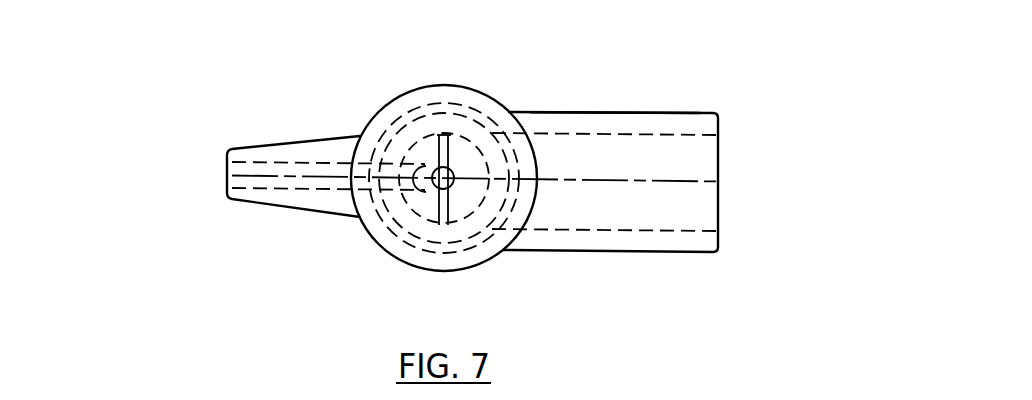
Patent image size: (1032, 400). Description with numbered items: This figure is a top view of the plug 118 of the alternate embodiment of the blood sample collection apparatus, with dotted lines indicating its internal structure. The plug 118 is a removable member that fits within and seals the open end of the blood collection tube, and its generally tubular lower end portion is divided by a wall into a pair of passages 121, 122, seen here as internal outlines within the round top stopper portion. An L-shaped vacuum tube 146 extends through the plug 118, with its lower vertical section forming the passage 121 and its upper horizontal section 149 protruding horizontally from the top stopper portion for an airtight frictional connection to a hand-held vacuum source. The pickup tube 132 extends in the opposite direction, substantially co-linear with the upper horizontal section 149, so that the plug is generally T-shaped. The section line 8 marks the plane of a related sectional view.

The section line 8- 8 is at (471, 137).
The plug 118 is at (448, 78).
The passage 121 is at (465, 152).
The passage 122 is at (420, 212).
The pickup tube 132 is at (306, 147).
The vacuum tube 146 is at (718, 212).
The upper horizontal section 149 is at (635, 112).